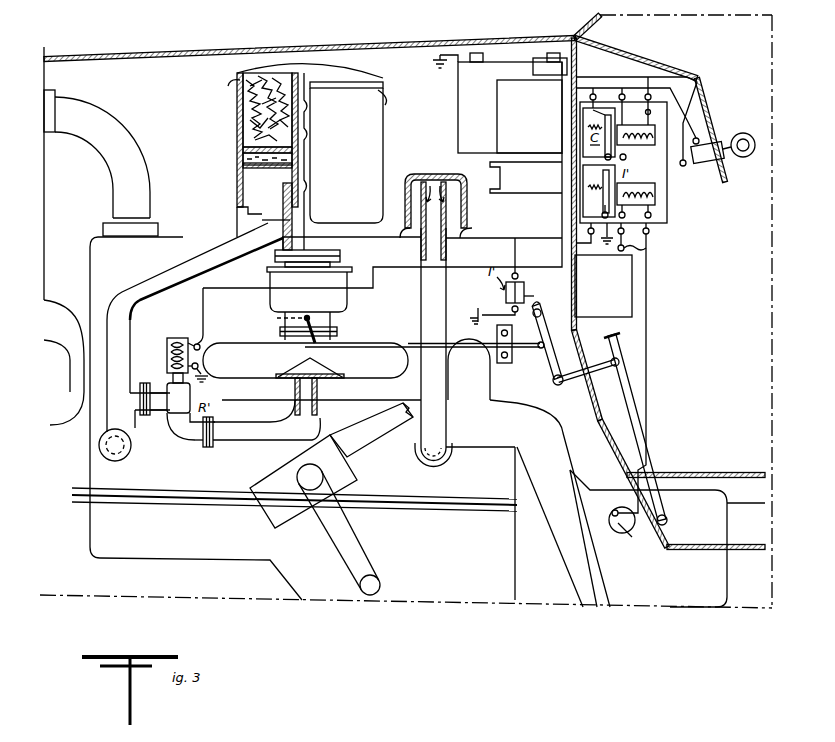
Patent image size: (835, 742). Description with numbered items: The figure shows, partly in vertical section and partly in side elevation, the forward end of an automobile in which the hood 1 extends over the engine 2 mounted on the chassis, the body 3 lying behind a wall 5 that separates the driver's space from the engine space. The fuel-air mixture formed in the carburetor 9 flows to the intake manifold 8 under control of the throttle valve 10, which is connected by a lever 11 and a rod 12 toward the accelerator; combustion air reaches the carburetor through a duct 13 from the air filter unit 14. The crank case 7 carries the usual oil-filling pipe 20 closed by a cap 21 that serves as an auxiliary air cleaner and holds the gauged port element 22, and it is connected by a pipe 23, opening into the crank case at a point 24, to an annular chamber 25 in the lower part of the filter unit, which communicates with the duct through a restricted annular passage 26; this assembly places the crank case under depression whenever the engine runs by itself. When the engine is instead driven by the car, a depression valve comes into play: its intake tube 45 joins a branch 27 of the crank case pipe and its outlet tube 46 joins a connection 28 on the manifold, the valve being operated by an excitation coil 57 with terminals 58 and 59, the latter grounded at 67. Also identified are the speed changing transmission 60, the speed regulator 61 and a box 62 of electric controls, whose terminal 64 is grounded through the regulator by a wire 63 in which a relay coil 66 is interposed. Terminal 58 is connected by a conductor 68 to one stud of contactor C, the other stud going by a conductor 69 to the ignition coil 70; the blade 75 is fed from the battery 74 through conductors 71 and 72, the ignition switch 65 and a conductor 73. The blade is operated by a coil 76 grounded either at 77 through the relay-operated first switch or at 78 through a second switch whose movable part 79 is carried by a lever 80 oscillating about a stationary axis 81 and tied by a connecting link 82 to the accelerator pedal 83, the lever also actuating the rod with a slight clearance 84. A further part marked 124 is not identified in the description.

The hood 1 is at (200, 56).
The engine 2 is at (90, 264).
The body 3 is at (590, 26).
The wall 5 is at (578, 62).
The crank case 7 is at (90, 484).
The intake manifold 8 is at (377, 378).
The carburetor 9 is at (352, 282).
The throttle valve 10 is at (297, 325).
The lever 11 is at (333, 322).
The rod 12 is at (391, 345).
The duct 13 is at (331, 252).
The air filter unit 14 is at (383, 156).
The oil-filling pipe 20 is at (446, 285).
The cap 21 is at (467, 206).
The gauged port element 22 is at (430, 180).
The pipe 23 is at (196, 260).
The point 24 is at (98, 446).
The annular chamber 25 is at (237, 184).
The restricted annular passage 26 is at (297, 193).
The branch 27 is at (136, 432).
The connection 28 is at (223, 438).
The intake tube 45 is at (145, 383).
The outlet tube 46 is at (186, 430).
The excitation coil 57 is at (178, 338).
The terminal 58 is at (199, 344).
The terminal 59 is at (198, 366).
The speed changing transmission 60 is at (729, 510).
The speed regulator 61 is at (627, 530).
The box 62 is at (633, 296).
The wire 63 is at (649, 328).
The terminal 64 is at (650, 250).
The ignition switch 65 is at (707, 164).
The coil 66 is at (656, 201).
The ground 67 is at (205, 380).
The conductor 68 is at (561, 227).
The conductor 69 is at (501, 124).
The ignition coil 70 is at (504, 163).
The conductor 71 is at (646, 95).
The conductor 72 is at (702, 123).
The conductor 73 is at (613, 76).
The battery 74 is at (466, 124).
The blade 75 is at (613, 160).
The coil 76 is at (628, 157).
The ground 77 is at (612, 246).
The ground 78 is at (477, 318).
The movable part 79 is at (526, 290).
The lever 80 is at (553, 380).
The stationary axis 81 is at (543, 312).
The connecting link 82 is at (590, 371).
The accelerator pedal 83 is at (641, 420).
The clearance 84 is at (520, 343).
The filter element 124 is at (306, 134).